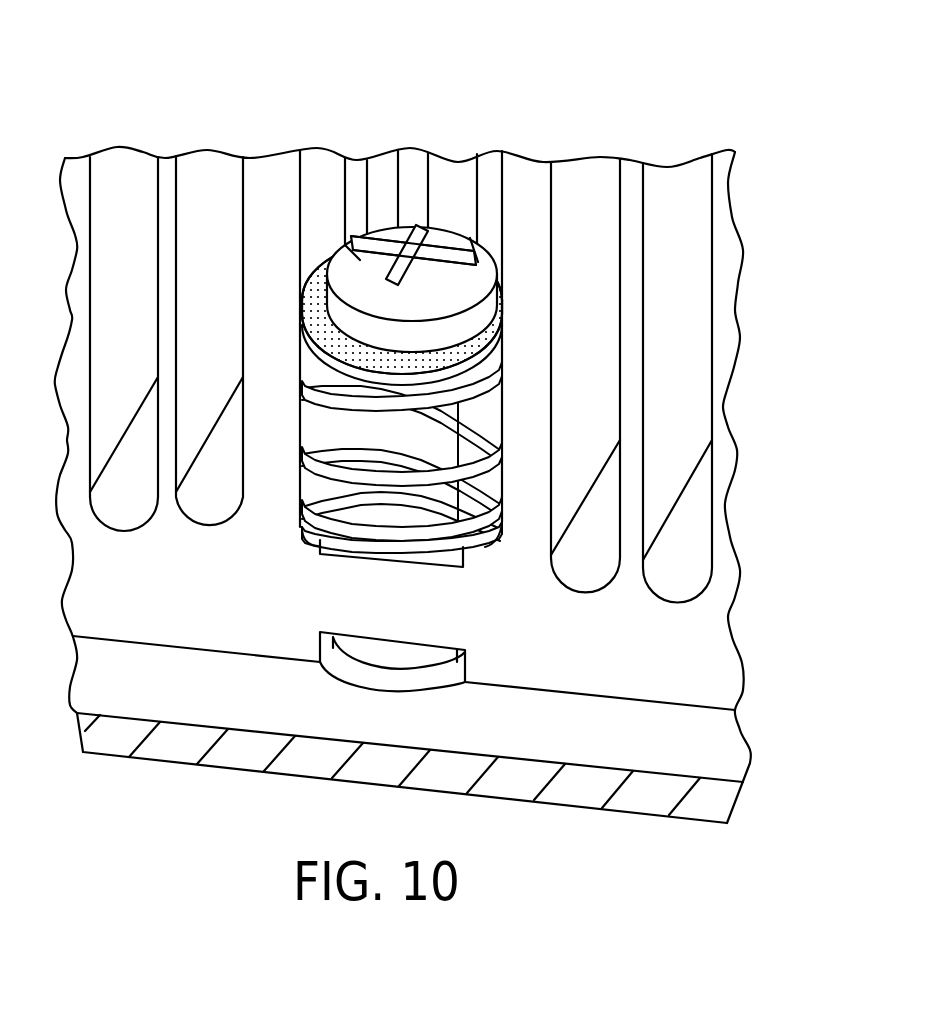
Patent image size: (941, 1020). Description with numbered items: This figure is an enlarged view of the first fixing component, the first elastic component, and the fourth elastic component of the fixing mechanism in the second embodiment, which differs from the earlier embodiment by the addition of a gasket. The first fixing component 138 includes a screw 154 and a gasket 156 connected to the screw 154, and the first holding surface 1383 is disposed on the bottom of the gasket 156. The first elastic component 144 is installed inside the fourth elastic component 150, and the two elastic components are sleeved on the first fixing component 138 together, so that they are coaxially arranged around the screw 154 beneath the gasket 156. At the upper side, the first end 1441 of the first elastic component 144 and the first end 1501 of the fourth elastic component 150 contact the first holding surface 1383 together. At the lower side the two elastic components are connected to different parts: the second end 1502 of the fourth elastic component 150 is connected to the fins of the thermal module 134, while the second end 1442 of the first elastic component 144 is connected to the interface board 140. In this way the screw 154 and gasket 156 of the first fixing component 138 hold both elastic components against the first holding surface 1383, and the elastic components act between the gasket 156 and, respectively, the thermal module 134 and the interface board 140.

The thermal module 134 is at (730, 250).
The first fixing component 138 is at (512, 304).
The screw 154 is at (442, 232).
The gasket 156 is at (500, 385).
The first holding surface 1383 is at (500, 423).
The fourth elastic component 150 is at (609, 457).
The first end of the fourth elastic component 1501 is at (447, 403).
The second end of the fourth elastic component 1502 is at (487, 537).
The first elastic component 144 is at (495, 564).
The first end of the first elastic component 1441 is at (357, 418).
The second end of the first elastic component 1442 is at (443, 678).
The interface board 140 is at (723, 767).